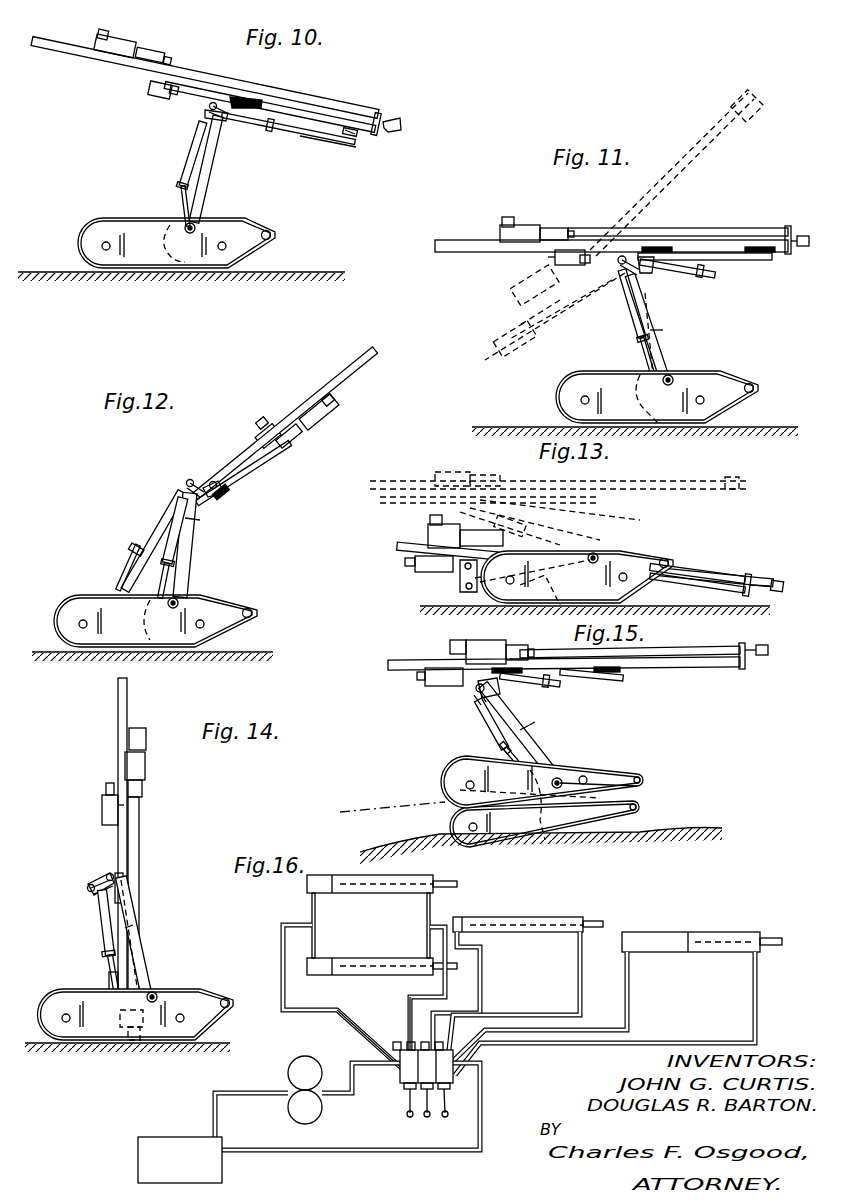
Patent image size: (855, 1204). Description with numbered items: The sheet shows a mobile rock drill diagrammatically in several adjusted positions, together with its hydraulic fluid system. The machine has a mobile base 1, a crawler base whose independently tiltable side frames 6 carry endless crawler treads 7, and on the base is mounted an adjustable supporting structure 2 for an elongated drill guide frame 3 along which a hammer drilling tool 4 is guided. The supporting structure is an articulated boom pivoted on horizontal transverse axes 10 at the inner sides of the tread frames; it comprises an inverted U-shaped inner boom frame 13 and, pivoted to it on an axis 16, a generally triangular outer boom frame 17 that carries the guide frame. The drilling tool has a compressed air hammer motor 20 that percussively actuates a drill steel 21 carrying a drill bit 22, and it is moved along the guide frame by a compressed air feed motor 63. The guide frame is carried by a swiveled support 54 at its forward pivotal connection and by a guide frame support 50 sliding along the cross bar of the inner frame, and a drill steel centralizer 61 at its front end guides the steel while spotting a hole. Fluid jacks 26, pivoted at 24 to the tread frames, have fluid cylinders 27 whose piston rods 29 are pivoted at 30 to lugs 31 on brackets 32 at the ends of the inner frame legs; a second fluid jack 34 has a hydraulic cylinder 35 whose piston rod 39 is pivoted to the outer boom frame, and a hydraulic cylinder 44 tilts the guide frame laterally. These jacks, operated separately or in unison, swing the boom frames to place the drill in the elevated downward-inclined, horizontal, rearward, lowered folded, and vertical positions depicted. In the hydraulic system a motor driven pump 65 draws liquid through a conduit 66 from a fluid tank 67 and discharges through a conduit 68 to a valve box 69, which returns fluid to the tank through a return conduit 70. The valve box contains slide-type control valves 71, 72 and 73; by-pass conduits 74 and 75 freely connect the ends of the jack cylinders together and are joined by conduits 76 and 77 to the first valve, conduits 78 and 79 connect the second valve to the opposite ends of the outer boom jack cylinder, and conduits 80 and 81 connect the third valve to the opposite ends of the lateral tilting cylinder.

In FIG. 10, the mobile base 1 is at (106, 222).
In FIG. 11, the mobile base 1 is at (560, 392).
In FIG. 12, the mobile base 1 is at (228, 605).
In FIG. 13, the mobile base 1 is at (612, 553).
In FIG. 15, the mobile base 1 is at (598, 785).
In FIG. 14, the mobile base 1 is at (70, 988).
In FIG. 11, the supporting structure 2 is at (665, 329).
In FIG. 12, the supporting structure 2 is at (200, 520).
In FIG. 15, the supporting structure 2 is at (535, 724).
In FIG. 14, the supporting structure 2 is at (138, 945).
In FIG. 10, the drill guide frame 3 is at (75, 60).
In FIG. 11, the drill guide frame 3 is at (465, 252).
In FIG. 12, the drill guide frame 3 is at (355, 362).
In FIG. 13, the drill guide frame 3 is at (717, 549).
In FIG. 15, the drill guide frame 3 is at (694, 668).
In FIG. 14, the drill guide frame 3 is at (127, 710).
In FIG. 10, the hammer drilling tool 4 is at (125, 44).
In FIG. 11, the hammer drilling tool 4 is at (508, 218).
In FIG. 12, the hammer drilling tool 4 is at (330, 420).
In FIG. 13, the hammer drilling tool 4 is at (430, 520).
In FIG. 15, the hammer drilling tool 4 is at (450, 645).
In FIG. 14, the hammer drilling tool 4 is at (146, 735).
In FIG. 10, the side frames 6 is at (122, 262).
In FIG. 11, the side frames 6 is at (695, 380).
In FIG. 12, the side frames 6 is at (100, 632).
In FIG. 13, the side frames 6 is at (628, 556).
In FIG. 15, the side frames 6 is at (452, 780).
In FIG. 14, the side frames 6 is at (78, 1030).
In FIG. 10, the crawler treads 7 is at (80, 240).
In FIG. 11, the crawler treads 7 is at (572, 372).
In FIG. 12, the crawler treads 7 is at (88, 596).
In FIG. 13, the crawler treads 7 is at (650, 556).
In FIG. 15, the crawler treads 7 is at (450, 765).
In FIG. 14, the crawler treads 7 is at (55, 992).
In FIG. 10, the horizontal transverse axes 10 is at (197, 226).
In FIG. 11, the horizontal transverse axes 10 is at (672, 378).
In FIG. 12, the horizontal transverse axes 10 is at (179, 600).
In FIG. 13, the horizontal transverse axes 10 is at (596, 553).
In FIG. 15, the horizontal transverse axes 10 is at (562, 780).
In FIG. 14, the horizontal transverse axes 10 is at (158, 995).
In FIG. 10, the inner boom frame 13 is at (215, 165).
In FIG. 11, the inner boom frame 13 is at (660, 313).
In FIG. 12, the inner boom frame 13 is at (190, 545).
In FIG. 13, the inner boom frame 13 is at (583, 554).
In FIG. 15, the inner boom frame 13 is at (545, 742).
In FIG. 14, the inner boom frame 13 is at (143, 967).
In FIG. 10, the pivot axis 16 is at (240, 99).
In FIG. 10, the outer boom frame 17 is at (345, 141).
In FIG. 11, the outer boom frame 17 is at (740, 261).
In FIG. 12, the outer boom frame 17 is at (131, 565).
In FIG. 15, the outer boom frame 17 is at (608, 680).
In FIG. 14, the outer boom frame 17 is at (109, 976).
In FIG. 10, the hammer motor 20 is at (133, 56).
In FIG. 11, the hammer motor 20 is at (540, 226).
In FIG. 12, the hammer motor 20 is at (313, 425).
In FIG. 13, the hammer motor 20 is at (460, 530).
In FIG. 15, the hammer motor 20 is at (480, 642).
In FIG. 14, the hammer motor 20 is at (145, 762).
In FIG. 10, the drill steel 21 is at (348, 116).
In FIG. 11, the drill steel 21 is at (693, 233).
In FIG. 12, the drill steel 21 is at (270, 464).
In FIG. 13, the drill steel 21 is at (690, 570).
In FIG. 15, the drill steel 21 is at (688, 649).
In FIG. 14, the drill steel 21 is at (139, 843).
In FIG. 10, the drill bit 22 is at (402, 124).
In FIG. 11, the drill bit 22 is at (805, 236).
In FIG. 13, the drill bit 22 is at (777, 581).
In FIG. 15, the drill bit 22 is at (763, 646).
In FIG. 14, the drill bit 22 is at (132, 1040).
In FIG. 10, the pivotal connection 24 is at (168, 234).
In FIG. 11, the pivotal connection 24 is at (668, 428).
In FIG. 12, the pivotal connection 24 is at (144, 620).
In FIG. 13, the pivotal connection 24 is at (548, 608).
In FIG. 15, the pivotal connection 24 is at (555, 835).
In FIG. 10, the fluid jacks 26 is at (184, 196).
In FIG. 11, the fluid jacks 26 is at (647, 350).
In FIG. 12, the fluid jacks 26 is at (170, 570).
In FIG. 15, the fluid jacks 26 is at (514, 760).
In FIG. 14, the fluid jacks 26 is at (106, 960).
In FIG. 16, the fluid cylinders 27 is at (382, 893).
In FIG. 10, the piston rods 29 is at (190, 153).
In FIG. 11, the piston rods 29 is at (630, 310).
In FIG. 12, the piston rods 29 is at (175, 548).
In FIG. 15, the piston rods 29 is at (492, 730).
In FIG. 14, the piston rods 29 is at (99, 913).
In FIG. 10, the pivotal connection 30 is at (208, 112).
In FIG. 11, the pivotal connection 30 is at (630, 270).
In FIG. 12, the pivotal connection 30 is at (188, 486).
In FIG. 15, the pivotal connection 30 is at (482, 704).
In FIG. 14, the pivotal connection 30 is at (96, 894).
In FIG. 10, the lugs 31 is at (210, 105).
In FIG. 11, the lugs 31 is at (620, 258).
In FIG. 12, the lugs 31 is at (187, 482).
In FIG. 15, the lugs 31 is at (478, 692).
In FIG. 14, the lugs 31 is at (87, 888).
In FIG. 10, the brackets 32 is at (207, 117).
In FIG. 11, the brackets 32 is at (652, 266).
In FIG. 12, the brackets 32 is at (213, 482).
In FIG. 13, the brackets 32 is at (460, 578).
In FIG. 15, the brackets 32 is at (480, 690).
In FIG. 14, the brackets 32 is at (108, 874).
In FIG. 10, the fluid jack 34 is at (250, 132).
In FIG. 11, the fluid jack 34 is at (690, 272).
In FIG. 12, the fluid jack 34 is at (163, 520).
In FIG. 15, the fluid jack 34 is at (530, 686).
In FIG. 16, the hydraulic cylinder 35 is at (550, 926).
In FIG. 10, the piston rod 39 is at (283, 134).
In FIG. 11, the piston rod 39 is at (720, 275).
In FIG. 15, the piston rod 39 is at (552, 684).
In FIG. 16, the hydraulic cylinder 44 is at (700, 925).
In FIG. 10, the guide frame support 50 is at (258, 104).
In FIG. 11, the guide frame support 50 is at (652, 247).
In FIG. 12, the guide frame support 50 is at (230, 494).
In FIG. 15, the guide frame support 50 is at (510, 668).
In FIG. 14, the guide frame support 50 is at (123, 880).
In FIG. 10, the swiveled support 54 is at (360, 136).
In FIG. 11, the swiveled support 54 is at (770, 252).
In FIG. 15, the swiveled support 54 is at (615, 672).
In FIG. 10, the drill steel centralizer 61 is at (380, 115).
In FIG. 11, the drill steel centralizer 61 is at (786, 232).
In FIG. 13, the drill steel centralizer 61 is at (747, 575).
In FIG. 15, the drill steel centralizer 61 is at (741, 644).
In FIG. 14, the drill steel centralizer 61 is at (126, 1036).
In FIG. 10, the feed motor 63 is at (162, 97).
In FIG. 11, the feed motor 63 is at (550, 258).
In FIG. 12, the feed motor 63 is at (266, 424).
In FIG. 13, the feed motor 63 is at (425, 572).
In FIG. 15, the feed motor 63 is at (428, 686).
In FIG. 14, the feed motor 63 is at (103, 797).
In FIG. 16, the pump 65 is at (303, 1068).
In FIG. 16, the conduit 66 is at (238, 1092).
In FIG. 16, the fluid tank 67 is at (172, 1137).
In FIG. 16, the conduit 68 is at (332, 1090).
In FIG. 16, the valve box 69 is at (398, 1080).
In FIG. 16, the return conduit 70 is at (482, 1090).
In FIG. 16, the control valve 71 is at (407, 1093).
In FIG. 16, the control valve 72 is at (426, 1116).
In FIG. 16, the control valve 73 is at (448, 1112).
In FIG. 16, the by-pass conduit 74 is at (310, 908).
In FIG. 16, the by-pass conduit 75 is at (434, 910).
In FIG. 16, the conduit 76 is at (348, 1002).
In FIG. 16, the conduit 77 is at (407, 1010).
In FIG. 16, the conduit 78 is at (481, 985).
In FIG. 16, the conduit 79 is at (579, 992).
In FIG. 16, the conduit 80 is at (626, 1000).
In FIG. 16, the conduit 81 is at (754, 996).